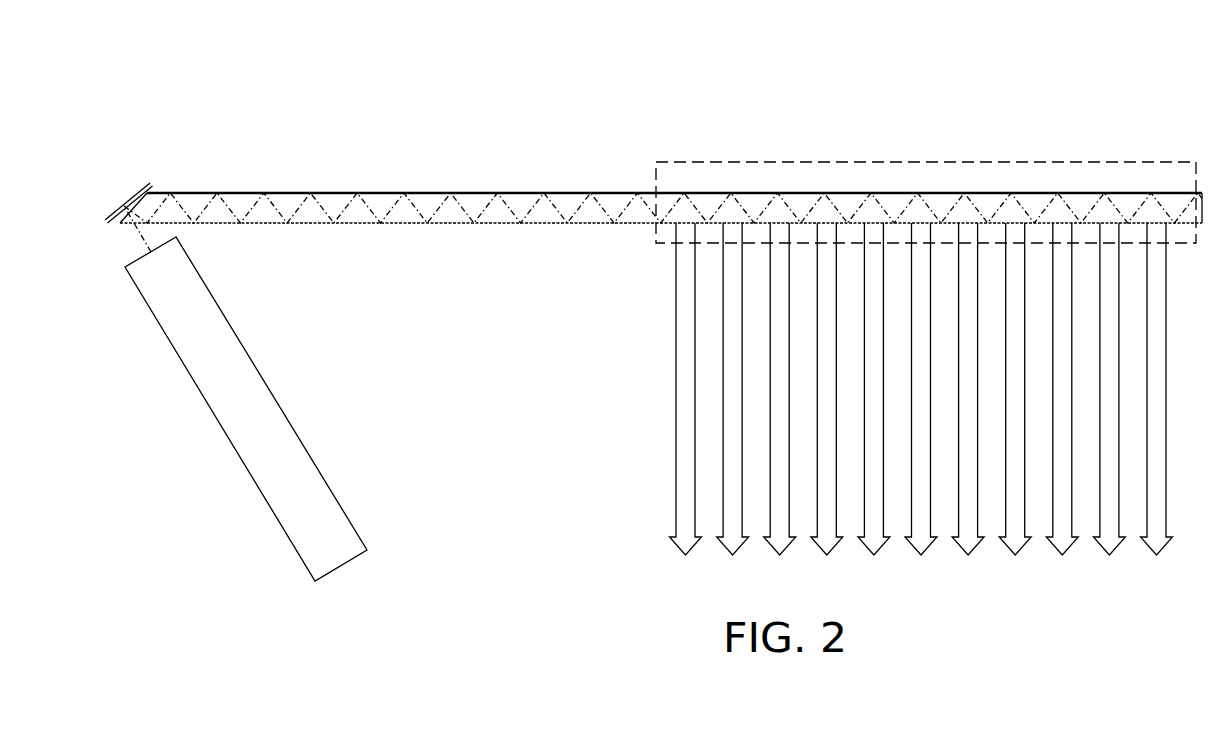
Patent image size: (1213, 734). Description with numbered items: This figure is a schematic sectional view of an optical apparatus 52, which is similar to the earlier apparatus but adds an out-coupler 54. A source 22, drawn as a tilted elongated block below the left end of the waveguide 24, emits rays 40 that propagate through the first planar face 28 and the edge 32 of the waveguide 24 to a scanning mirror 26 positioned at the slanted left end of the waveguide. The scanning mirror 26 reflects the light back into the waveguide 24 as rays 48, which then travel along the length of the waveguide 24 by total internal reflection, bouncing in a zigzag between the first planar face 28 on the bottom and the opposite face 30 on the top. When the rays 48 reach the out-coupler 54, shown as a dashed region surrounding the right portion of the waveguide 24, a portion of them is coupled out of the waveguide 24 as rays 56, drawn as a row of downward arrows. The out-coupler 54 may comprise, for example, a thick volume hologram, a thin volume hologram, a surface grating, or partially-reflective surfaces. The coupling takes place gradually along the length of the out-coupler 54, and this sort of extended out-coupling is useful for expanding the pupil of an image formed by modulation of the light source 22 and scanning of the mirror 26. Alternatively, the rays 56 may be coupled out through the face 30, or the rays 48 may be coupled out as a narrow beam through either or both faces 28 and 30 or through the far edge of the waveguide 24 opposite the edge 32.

The source 22 is at (319, 472).
The waveguide 24 is at (567, 205).
The scanning mirror 26 is at (112, 211).
The first planar face 28 is at (357, 226).
The face 30 is at (428, 192).
The edge 32 is at (139, 196).
The rays 40 is at (146, 241).
The rays 48 is at (227, 204).
The optical apparatus 52 is at (134, 83).
The out-coupler 54 is at (848, 162).
The rays 56 is at (733, 495).